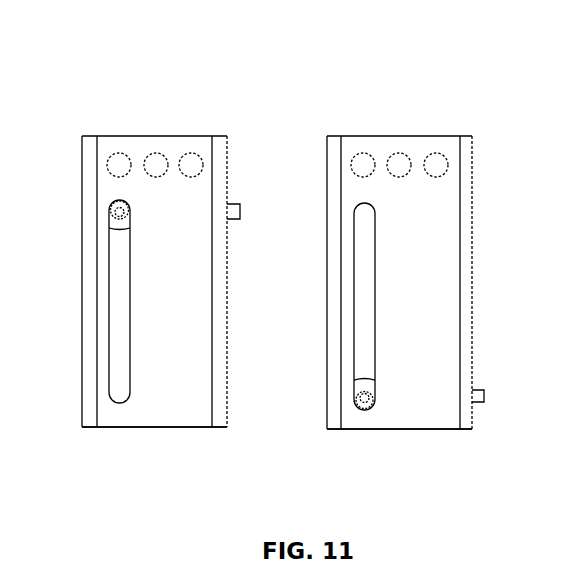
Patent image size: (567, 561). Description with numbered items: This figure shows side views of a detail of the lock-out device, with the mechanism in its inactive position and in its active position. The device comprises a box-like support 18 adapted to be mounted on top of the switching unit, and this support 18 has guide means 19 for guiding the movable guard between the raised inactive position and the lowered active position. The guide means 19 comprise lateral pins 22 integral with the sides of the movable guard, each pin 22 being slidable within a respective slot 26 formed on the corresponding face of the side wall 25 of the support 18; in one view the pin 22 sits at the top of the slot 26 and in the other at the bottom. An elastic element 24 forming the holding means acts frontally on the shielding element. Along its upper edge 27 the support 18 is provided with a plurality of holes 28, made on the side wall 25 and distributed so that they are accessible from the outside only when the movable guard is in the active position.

The box-like support 18 is at (214, 131).
The guide means 19 is at (106, 358).
The lateral pin 22 is at (109, 215).
The elastic element 24 is at (241, 215).
The side wall 25 is at (177, 405).
The slot 26 is at (120, 320).
The upper edge 27 is at (101, 142).
The holes 28 is at (191, 158).